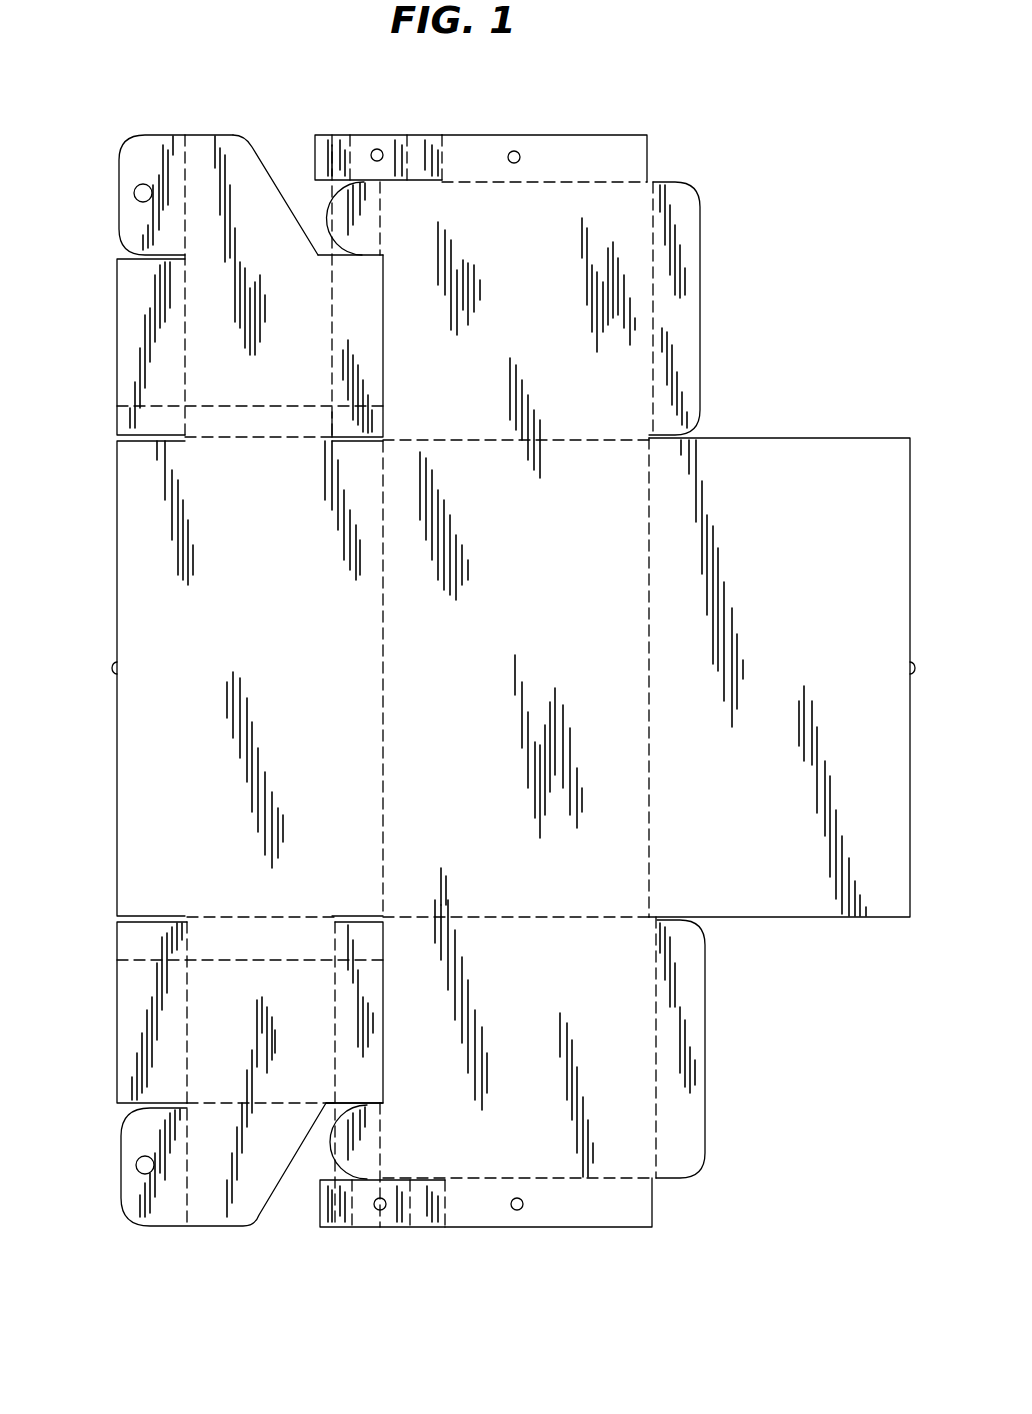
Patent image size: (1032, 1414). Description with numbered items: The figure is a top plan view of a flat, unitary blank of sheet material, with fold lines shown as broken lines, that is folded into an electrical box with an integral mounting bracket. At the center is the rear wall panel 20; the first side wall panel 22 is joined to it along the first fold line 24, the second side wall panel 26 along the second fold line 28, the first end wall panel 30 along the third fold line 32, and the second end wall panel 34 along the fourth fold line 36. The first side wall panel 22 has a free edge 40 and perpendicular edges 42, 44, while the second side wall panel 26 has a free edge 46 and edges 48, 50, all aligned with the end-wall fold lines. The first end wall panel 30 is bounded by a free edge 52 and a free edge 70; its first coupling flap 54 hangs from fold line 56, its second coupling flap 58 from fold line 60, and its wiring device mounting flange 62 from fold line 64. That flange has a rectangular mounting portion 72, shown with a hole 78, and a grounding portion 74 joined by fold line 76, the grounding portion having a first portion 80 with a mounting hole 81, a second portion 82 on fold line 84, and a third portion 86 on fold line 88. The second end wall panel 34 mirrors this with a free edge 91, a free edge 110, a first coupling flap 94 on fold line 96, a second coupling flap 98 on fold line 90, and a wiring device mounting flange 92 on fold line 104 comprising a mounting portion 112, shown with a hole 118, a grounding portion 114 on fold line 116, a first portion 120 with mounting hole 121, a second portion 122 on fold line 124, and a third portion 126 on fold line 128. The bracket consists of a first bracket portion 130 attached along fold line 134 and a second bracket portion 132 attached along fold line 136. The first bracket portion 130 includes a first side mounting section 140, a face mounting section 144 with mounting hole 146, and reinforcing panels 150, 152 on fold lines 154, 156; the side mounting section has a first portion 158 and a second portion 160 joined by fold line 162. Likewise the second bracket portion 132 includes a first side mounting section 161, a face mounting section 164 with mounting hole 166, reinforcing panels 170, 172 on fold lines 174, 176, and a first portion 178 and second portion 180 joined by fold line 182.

The rear wall panel 20 is at (516, 684).
The first side wall panel 22 is at (250, 678).
The first fold line 24 is at (385, 640).
The second side wall panel 26 is at (779, 677).
The second fold line 28 is at (651, 640).
The first end wall panel 30 is at (518, 330).
The third fold line 32 is at (491, 440).
The second end wall panel 34 is at (519, 1039).
The fourth fold line 36 is at (545, 920).
The free edge 40 is at (120, 668).
The edge 42 is at (185, 441).
The edge 44 is at (152, 916).
The free edge 46 is at (908, 668).
The edge 48 is at (757, 440).
The edge 50 is at (757, 917).
The free edge 52 is at (440, 184).
The first coupling flap 54 is at (330, 215).
The fold line 56 is at (384, 218).
The second coupling flap 58 is at (701, 272).
The fold line 60 is at (653, 384).
The wiring device mounting flange 62 is at (652, 160).
The fold line 64 is at (530, 186).
The free edge 70 is at (384, 300).
The mounting portion 72 is at (544, 158).
The grounding portion 74 is at (316, 148).
The fold line 76 is at (445, 140).
The hole 78 is at (518, 150).
The first portion 80 is at (378, 134).
The mounting hole 81 is at (381, 162).
The second portion 82 is at (330, 134).
The fold line 84 is at (348, 134).
The third portion 86 is at (424, 134).
The fold line 88 is at (382, 134).
The fold line 90 is at (656, 975).
The free edge 91 is at (420, 1178).
The wiring device mounting flange 92 is at (657, 1208).
The first coupling flap 94 is at (335, 1140).
The fold line 96 is at (386, 1143).
The second coupling flap 98 is at (706, 1100).
The fold line 104 is at (490, 1177).
The free edge 110 is at (388, 1050).
The mounting portion 112 is at (548, 1202).
The grounding portion 114 is at (340, 1230).
The fold line 116 is at (447, 1210).
The hole 118 is at (519, 1212).
The first portion 120 is at (366, 1228).
The mounting hole 121 is at (381, 1198).
The second portion 122 is at (325, 1200).
The fold line 124 is at (355, 1228).
The third portion 126 is at (420, 1228).
The fold line 128 is at (410, 1228).
The first bracket portion 130 is at (157, 118).
The second bracket portion 132 is at (212, 1235).
The fold line 134 is at (317, 441).
The fold line 136 is at (285, 916).
The first side mounting section 140 is at (218, 134).
The face mounting section 144 is at (118, 150).
The mounting hole 146 is at (136, 196).
The reinforcing panel 150 is at (117, 334).
The reinforcing panel 152 is at (384, 338).
The fold line 154 is at (188, 318).
The fold line 156 is at (330, 322).
The first portion 158 is at (258, 420).
The second portion 160 is at (327, 273).
The first side mounting section 161 is at (246, 1230).
The fold line 162 is at (260, 406).
The face mounting section 164 is at (120, 1215).
The mounting hole 166 is at (136, 1165).
The reinforcing panel 170 is at (117, 990).
The reinforcing panel 172 is at (384, 990).
The fold line 174 is at (190, 978).
The fold line 176 is at (333, 978).
The first portion 178 is at (250, 938).
The second portion 180 is at (261, 1107).
The fold line 182 is at (305, 958).